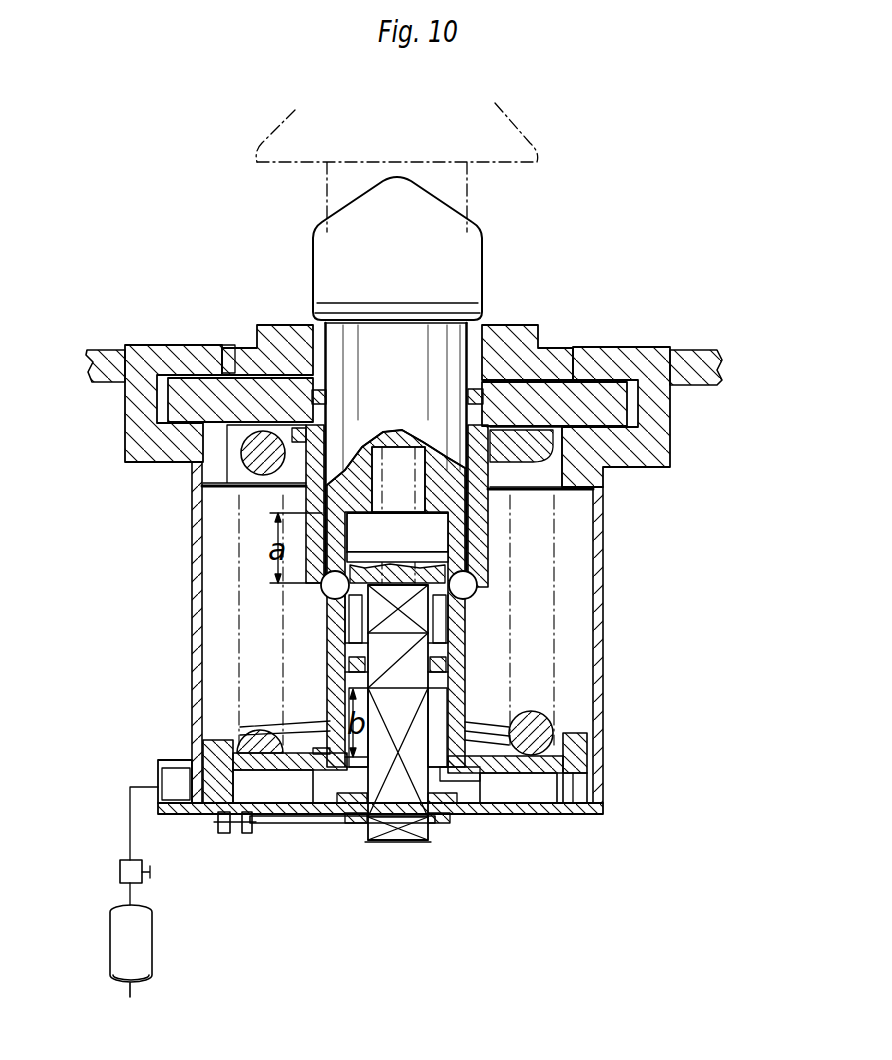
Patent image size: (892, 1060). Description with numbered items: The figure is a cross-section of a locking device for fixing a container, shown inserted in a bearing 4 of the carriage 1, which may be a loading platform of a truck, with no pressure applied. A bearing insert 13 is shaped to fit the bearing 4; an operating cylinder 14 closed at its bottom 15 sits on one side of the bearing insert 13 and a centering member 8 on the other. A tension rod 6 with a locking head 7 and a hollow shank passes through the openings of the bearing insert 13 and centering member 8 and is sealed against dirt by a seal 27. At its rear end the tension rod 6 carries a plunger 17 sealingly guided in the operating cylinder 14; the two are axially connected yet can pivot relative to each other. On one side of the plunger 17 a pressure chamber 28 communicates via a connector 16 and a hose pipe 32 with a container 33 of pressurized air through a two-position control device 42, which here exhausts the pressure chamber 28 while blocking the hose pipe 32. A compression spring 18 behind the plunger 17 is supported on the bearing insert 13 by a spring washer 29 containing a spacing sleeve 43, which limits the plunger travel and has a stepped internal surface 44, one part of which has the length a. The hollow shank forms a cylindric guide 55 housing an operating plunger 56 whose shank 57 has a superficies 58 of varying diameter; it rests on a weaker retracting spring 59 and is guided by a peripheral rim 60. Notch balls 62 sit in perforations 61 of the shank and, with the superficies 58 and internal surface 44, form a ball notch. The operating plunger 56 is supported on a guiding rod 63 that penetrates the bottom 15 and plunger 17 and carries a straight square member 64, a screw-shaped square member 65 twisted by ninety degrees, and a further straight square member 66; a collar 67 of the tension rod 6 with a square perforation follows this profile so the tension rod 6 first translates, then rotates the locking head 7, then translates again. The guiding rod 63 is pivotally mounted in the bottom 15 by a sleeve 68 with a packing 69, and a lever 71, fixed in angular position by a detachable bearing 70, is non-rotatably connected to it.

The carriage 1 is at (102, 372).
The bearing 4 is at (660, 433).
The tension rod 6 is at (442, 337).
The locking head 7 is at (461, 240).
The centering member 8 is at (526, 332).
The bearing insert 13 is at (613, 392).
The operating cylinder 14 is at (597, 512).
The bottom 15 is at (577, 810).
The connector 16 is at (167, 783).
The plunger 17 is at (284, 772).
The compression spring 18 is at (260, 732).
The seal 27 is at (467, 402).
The pressure chamber 28 is at (250, 797).
The spring washer 29 is at (217, 458).
The hose pipe 32 is at (130, 812).
The container 33 is at (122, 942).
The control device 42 is at (118, 868).
The spacing sleeve 43 is at (305, 480).
The internal surface 44 is at (327, 513).
The cylindric guide 55 is at (450, 687).
The operating plunger 56 is at (452, 672).
The shank 57 is at (471, 594).
The superficies 58 is at (357, 613).
The retracting spring 59 is at (383, 452).
The peripheral rim 60 is at (432, 553).
The perforations 61 is at (432, 572).
The notch balls 62 is at (322, 588).
The guiding rod 63 is at (378, 838).
The straight square member 64 is at (396, 828).
The screw-shaped square member 65 is at (388, 665).
The straight square member 66 is at (370, 618).
The collar 67 is at (440, 768).
The sleeve 68 is at (447, 817).
The packing 69 is at (438, 820).
The bearing 70 is at (222, 838).
The lever 71 is at (327, 818).